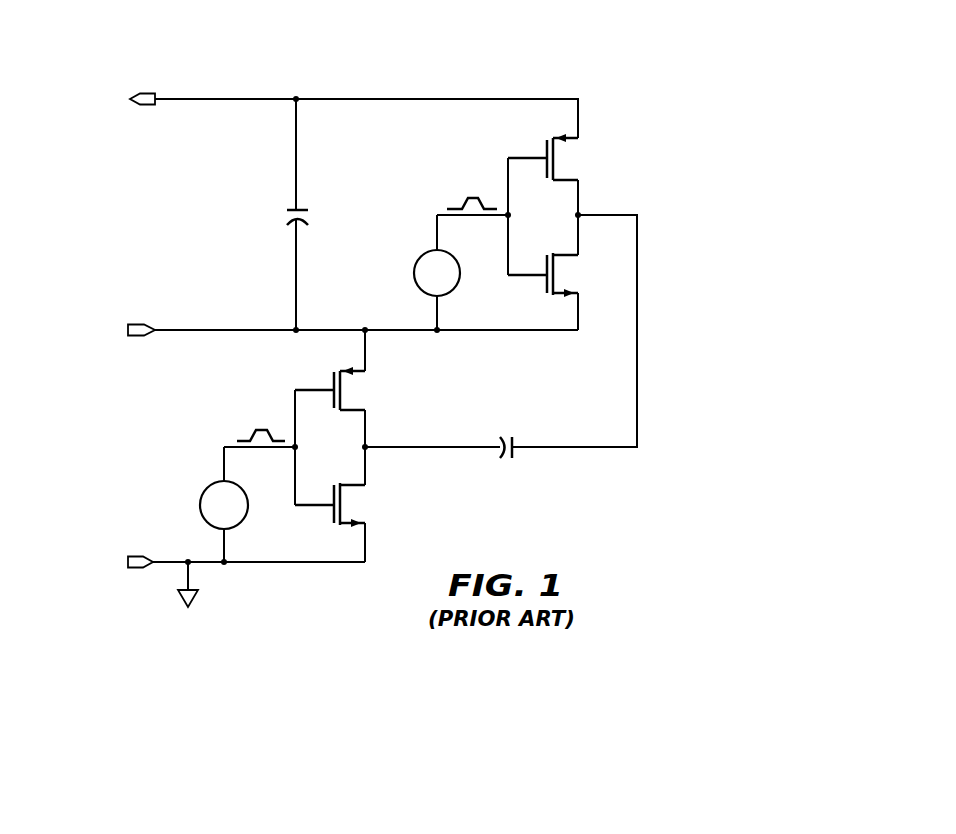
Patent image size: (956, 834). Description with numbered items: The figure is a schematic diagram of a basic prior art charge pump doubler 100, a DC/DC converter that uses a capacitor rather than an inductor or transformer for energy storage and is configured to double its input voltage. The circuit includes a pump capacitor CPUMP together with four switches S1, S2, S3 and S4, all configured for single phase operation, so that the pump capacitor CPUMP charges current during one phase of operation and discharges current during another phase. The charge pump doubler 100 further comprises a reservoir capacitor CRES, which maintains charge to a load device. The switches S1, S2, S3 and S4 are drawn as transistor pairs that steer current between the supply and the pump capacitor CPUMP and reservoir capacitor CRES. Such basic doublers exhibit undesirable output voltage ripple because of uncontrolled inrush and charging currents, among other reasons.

The charge pump doubler 100 is at (480, 66).
The reservoir capacitor CRES is at (265, 214).
The pump capacitor CPUMP is at (500, 428).
The switch S1 is at (347, 389).
The switch S2 is at (347, 505).
The switch S3 is at (560, 157).
The switch S4 is at (560, 275).